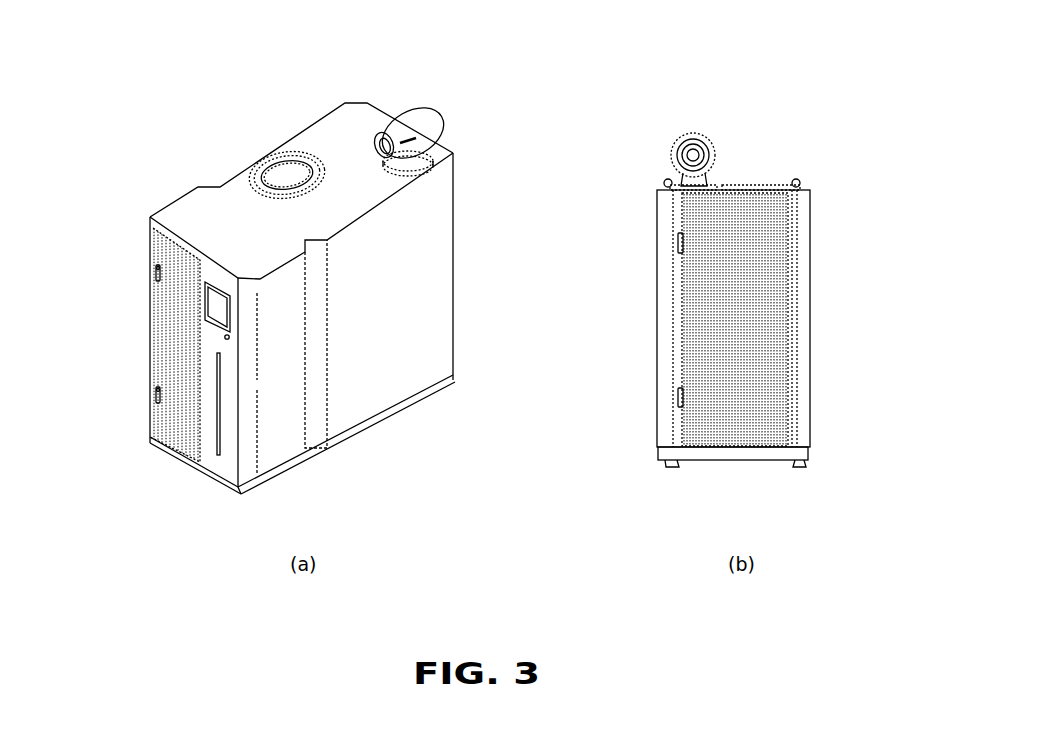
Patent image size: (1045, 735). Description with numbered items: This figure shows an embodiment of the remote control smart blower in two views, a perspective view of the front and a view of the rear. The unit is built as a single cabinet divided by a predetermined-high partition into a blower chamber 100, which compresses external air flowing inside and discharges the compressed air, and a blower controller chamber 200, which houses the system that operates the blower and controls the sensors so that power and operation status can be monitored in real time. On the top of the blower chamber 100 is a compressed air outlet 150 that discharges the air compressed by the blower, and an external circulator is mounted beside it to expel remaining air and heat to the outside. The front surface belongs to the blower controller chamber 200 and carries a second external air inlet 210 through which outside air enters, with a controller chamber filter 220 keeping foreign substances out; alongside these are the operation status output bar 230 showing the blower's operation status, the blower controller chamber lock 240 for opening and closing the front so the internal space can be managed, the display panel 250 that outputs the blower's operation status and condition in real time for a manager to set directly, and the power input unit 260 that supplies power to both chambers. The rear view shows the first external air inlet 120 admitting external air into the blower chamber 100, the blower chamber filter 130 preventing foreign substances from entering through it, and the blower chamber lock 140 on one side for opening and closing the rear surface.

The blower chamber 100 is at (333, 95).
The compressed air outlet 150 is at (285, 178).
The blower controller chamber 200 is at (158, 186).
The second external air inlet 210 is at (175, 328).
The controller chamber filter 220 is at (176, 345).
The operation status output bar 230 is at (218, 445).
The blower controller chamber lock 240 is at (155, 395).
The display panel 250 is at (216, 303).
The power input unit 260 is at (226, 338).
The first external air inlet 120 is at (768, 292).
The blower chamber filter 130 is at (735, 319).
The blower chamber lock 140 is at (678, 243).